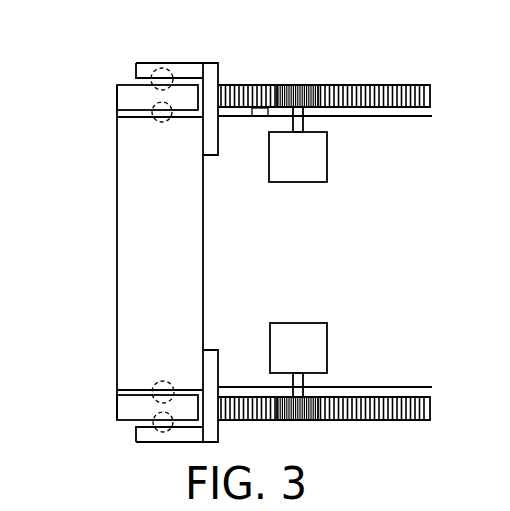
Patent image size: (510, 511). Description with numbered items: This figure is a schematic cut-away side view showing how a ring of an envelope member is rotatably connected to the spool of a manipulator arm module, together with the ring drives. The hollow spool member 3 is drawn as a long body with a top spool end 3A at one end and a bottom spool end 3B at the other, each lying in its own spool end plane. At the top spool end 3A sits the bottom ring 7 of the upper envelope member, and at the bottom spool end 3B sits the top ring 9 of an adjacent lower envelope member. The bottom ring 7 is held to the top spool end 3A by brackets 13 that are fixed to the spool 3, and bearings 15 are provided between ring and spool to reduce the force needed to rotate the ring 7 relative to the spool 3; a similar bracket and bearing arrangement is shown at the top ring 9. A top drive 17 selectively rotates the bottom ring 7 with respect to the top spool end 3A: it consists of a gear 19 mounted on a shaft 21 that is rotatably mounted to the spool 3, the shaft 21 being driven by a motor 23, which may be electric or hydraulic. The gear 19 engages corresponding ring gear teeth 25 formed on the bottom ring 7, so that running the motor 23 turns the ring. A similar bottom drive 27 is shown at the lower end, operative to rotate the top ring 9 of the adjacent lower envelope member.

The spool member 3 is at (117, 251).
The top spool end 3A is at (116, 117).
The bottom spool end 3B is at (115, 390).
The bottom ring 7 is at (117, 98).
The top ring 9 is at (117, 407).
The brackets 13 is at (222, 148).
The bearings 15 is at (162, 70).
The top drive 17 is at (341, 137).
The gear 19 is at (297, 85).
The shaft 21 is at (305, 118).
The motor 23 is at (298, 184).
The ring gear teeth 25 is at (387, 86).
The bottom drive 27 is at (350, 340).